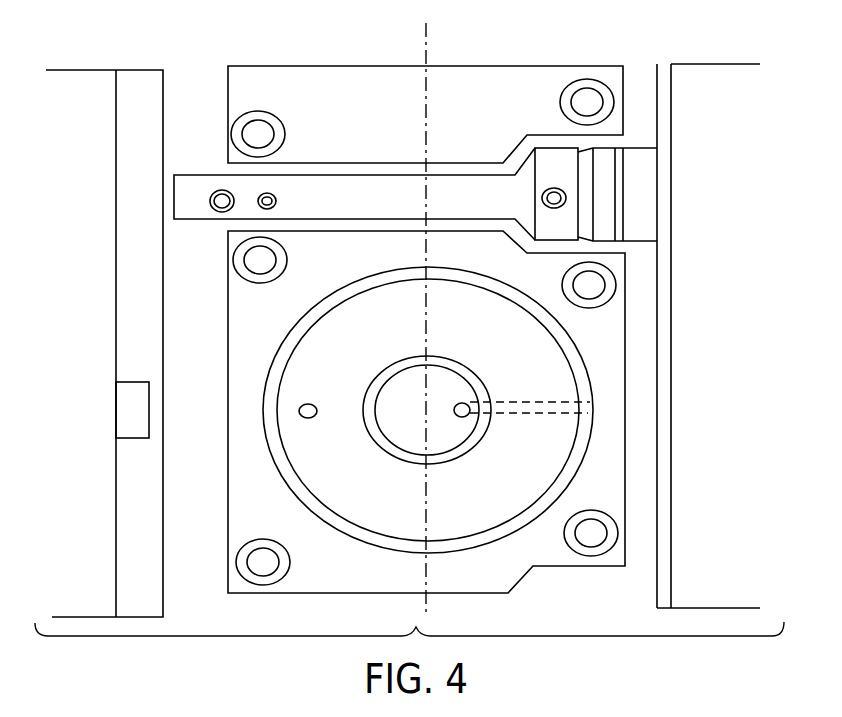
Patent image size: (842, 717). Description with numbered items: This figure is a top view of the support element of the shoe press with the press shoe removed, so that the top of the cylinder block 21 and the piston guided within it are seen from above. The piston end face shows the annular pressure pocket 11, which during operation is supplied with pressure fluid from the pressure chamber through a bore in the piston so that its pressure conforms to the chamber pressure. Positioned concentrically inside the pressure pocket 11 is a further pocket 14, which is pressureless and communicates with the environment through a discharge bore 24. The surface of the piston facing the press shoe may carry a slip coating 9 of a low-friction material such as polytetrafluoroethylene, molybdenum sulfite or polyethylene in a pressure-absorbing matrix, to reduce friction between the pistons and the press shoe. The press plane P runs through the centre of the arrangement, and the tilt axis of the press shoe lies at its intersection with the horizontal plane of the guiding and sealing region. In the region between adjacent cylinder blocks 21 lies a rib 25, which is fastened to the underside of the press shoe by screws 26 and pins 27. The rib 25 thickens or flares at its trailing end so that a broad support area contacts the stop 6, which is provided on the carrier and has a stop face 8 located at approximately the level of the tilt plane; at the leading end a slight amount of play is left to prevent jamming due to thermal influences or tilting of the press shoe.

The stop 6 is at (640, 172).
The stop face 8 is at (578, 177).
The slip coating 9 is at (573, 445).
The annular pressure pocket 11 is at (540, 350).
The pocket 14 is at (452, 433).
The cylinder block 21 is at (244, 483).
The discharge bore 24 is at (590, 402).
The rib 25 is at (458, 187).
The screw 26 is at (222, 197).
The pin 27 is at (270, 197).
The press plane P is at (426, 35).